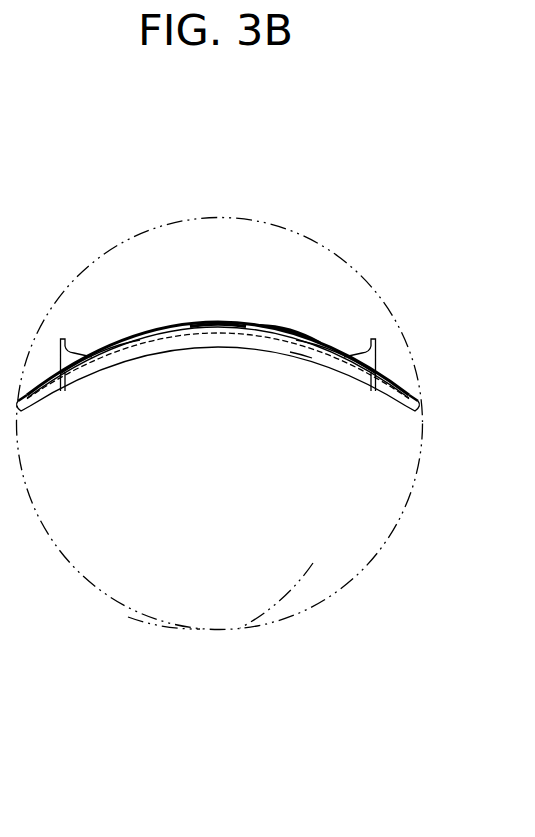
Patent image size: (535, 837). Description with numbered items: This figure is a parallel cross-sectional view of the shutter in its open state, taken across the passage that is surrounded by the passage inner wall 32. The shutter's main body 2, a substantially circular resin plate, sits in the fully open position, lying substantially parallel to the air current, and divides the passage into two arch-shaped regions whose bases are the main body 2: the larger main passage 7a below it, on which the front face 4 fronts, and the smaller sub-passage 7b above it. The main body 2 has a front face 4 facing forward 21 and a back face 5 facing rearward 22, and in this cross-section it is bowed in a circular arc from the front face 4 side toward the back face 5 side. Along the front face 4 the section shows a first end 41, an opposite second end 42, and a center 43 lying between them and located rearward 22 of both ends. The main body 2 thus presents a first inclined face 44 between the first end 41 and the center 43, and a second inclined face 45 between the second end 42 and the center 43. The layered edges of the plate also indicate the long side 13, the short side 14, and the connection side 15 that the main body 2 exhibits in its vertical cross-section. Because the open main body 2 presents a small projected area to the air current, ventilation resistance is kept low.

The main body 2 is at (181, 351).
The front face 4 is at (66, 392).
The back face 5 is at (152, 333).
The main passage 7a is at (313, 563).
The sub-passage 7b is at (132, 258).
The long side 13 is at (302, 357).
The short side 14 is at (286, 331).
The connection side 15 is at (218, 326).
The forward 21 is at (238, 482).
The rearward 22 is at (226, 281).
The passage inner wall 32 is at (128, 617).
The first end 41 is at (49, 393).
The second end 42 is at (385, 395).
The center 43 is at (213, 329).
The first inclined face 44 is at (133, 356).
The second inclined face 45 is at (324, 358).